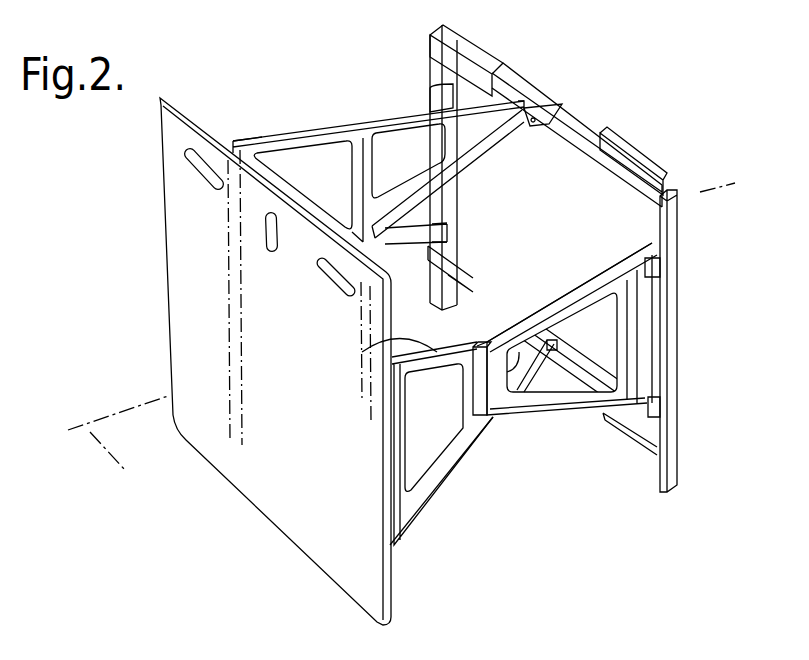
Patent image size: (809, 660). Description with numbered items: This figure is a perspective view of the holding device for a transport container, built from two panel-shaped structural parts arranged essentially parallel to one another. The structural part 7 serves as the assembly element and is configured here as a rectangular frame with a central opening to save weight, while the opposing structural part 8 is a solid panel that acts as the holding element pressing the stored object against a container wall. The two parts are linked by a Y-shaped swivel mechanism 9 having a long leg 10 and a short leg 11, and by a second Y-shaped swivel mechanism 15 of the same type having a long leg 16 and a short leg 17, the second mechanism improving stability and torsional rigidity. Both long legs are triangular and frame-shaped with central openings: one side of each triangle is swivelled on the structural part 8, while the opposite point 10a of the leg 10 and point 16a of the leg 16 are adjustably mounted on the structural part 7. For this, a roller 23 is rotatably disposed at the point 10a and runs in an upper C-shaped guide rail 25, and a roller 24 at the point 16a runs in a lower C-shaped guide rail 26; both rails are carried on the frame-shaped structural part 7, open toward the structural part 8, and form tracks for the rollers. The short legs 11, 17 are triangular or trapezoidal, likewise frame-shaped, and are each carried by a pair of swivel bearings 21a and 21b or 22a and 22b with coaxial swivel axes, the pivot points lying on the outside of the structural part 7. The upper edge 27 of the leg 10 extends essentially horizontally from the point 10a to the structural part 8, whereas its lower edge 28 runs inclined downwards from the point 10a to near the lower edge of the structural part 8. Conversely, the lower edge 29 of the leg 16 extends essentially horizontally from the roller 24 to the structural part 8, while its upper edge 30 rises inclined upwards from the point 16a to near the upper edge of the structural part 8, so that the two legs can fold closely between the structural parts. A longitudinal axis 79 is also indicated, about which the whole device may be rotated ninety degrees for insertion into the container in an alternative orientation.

The structural part 7 is at (675, 456).
The structural part 8 is at (168, 303).
The swivel mechanism 9 is at (358, 161).
The long leg 10 is at (253, 148).
The point of the triangle 10a is at (508, 100).
The short leg 11 is at (400, 140).
The second swivel mechanism 15 is at (565, 371).
The long leg 16 is at (443, 467).
The point of the triangle 16a is at (530, 352).
The short leg 17 is at (580, 407).
The swivel bearing 21a is at (430, 92).
The swivel bearing 21b is at (445, 217).
The swivel bearing 22a is at (656, 402).
The swivel bearing 22b is at (660, 256).
The roller 23 is at (535, 115).
The roller 24 is at (552, 350).
The guide rail 25 is at (575, 150).
The guide rail 26 is at (487, 297).
The upper edge 27 is at (285, 138).
The lower edge 28 is at (367, 232).
The lower edge 29 is at (410, 520).
The upper edge 30 is at (380, 346).
The longitudinal axis 79 is at (112, 462).